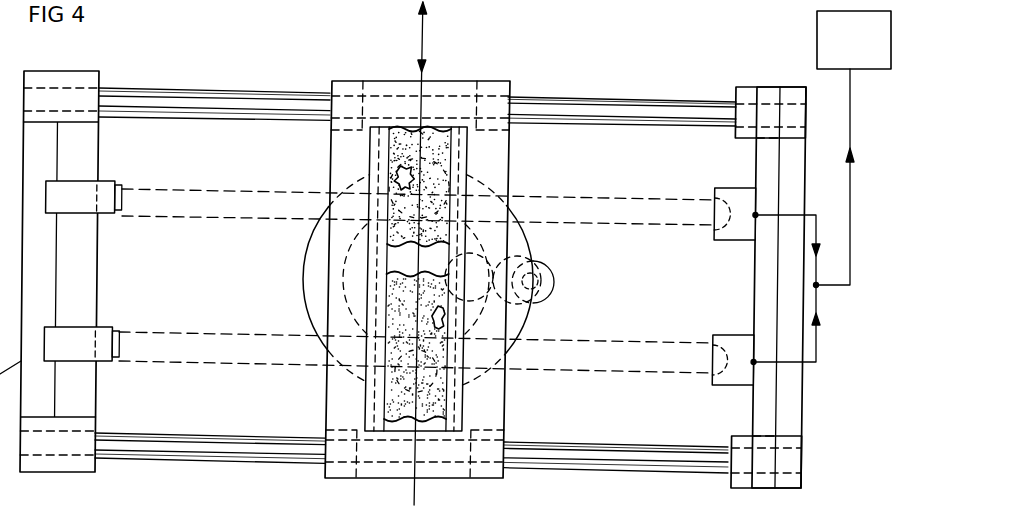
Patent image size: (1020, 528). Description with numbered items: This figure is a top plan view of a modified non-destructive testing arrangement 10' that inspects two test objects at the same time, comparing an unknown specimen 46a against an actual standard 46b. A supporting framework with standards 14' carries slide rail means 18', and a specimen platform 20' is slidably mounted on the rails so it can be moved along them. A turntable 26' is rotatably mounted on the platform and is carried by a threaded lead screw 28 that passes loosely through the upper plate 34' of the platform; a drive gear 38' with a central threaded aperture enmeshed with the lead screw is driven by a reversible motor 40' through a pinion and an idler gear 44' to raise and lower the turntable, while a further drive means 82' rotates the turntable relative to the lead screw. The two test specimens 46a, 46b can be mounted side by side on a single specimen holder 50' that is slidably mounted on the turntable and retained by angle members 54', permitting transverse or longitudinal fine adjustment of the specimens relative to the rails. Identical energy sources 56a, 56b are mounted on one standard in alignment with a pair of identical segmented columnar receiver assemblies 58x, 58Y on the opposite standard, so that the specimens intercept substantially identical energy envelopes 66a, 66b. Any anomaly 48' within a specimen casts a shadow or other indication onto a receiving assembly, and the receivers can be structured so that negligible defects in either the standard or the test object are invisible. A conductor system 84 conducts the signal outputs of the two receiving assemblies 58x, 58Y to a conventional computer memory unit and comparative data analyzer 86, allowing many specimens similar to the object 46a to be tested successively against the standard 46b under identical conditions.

The non-destructive testing arrangement 10' is at (507, 253).
The standard 14' is at (794, 287).
The slide rail means 18' is at (415, 271).
The specimen platform 20' is at (465, 279).
The turntable 26' is at (395, 280).
The threaded lead screw 28 is at (414, 353).
The upper plate 34' is at (323, 279).
The drive gear 38' is at (376, 279).
The reversible motor 40' is at (559, 273).
The idler gear 44' is at (536, 267).
The test object 46a is at (436, 172).
The standard specimen 46b is at (428, 405).
The anomaly 48' is at (439, 239).
The specimen holder 50' is at (437, 238).
The angle member 54' is at (421, 279).
The energy source 56a is at (100, 192).
The energy source 56b is at (100, 338).
The receiver assembly 58x is at (735, 234).
The receiver assembly 58Y is at (733, 348).
The energy envelope 66a is at (285, 210).
The energy envelope 66b is at (280, 348).
The drive means 82' is at (512, 235).
The conductor system 84 is at (851, 226).
The computer memory unit and comparative data analyzer 86 is at (817, 36).